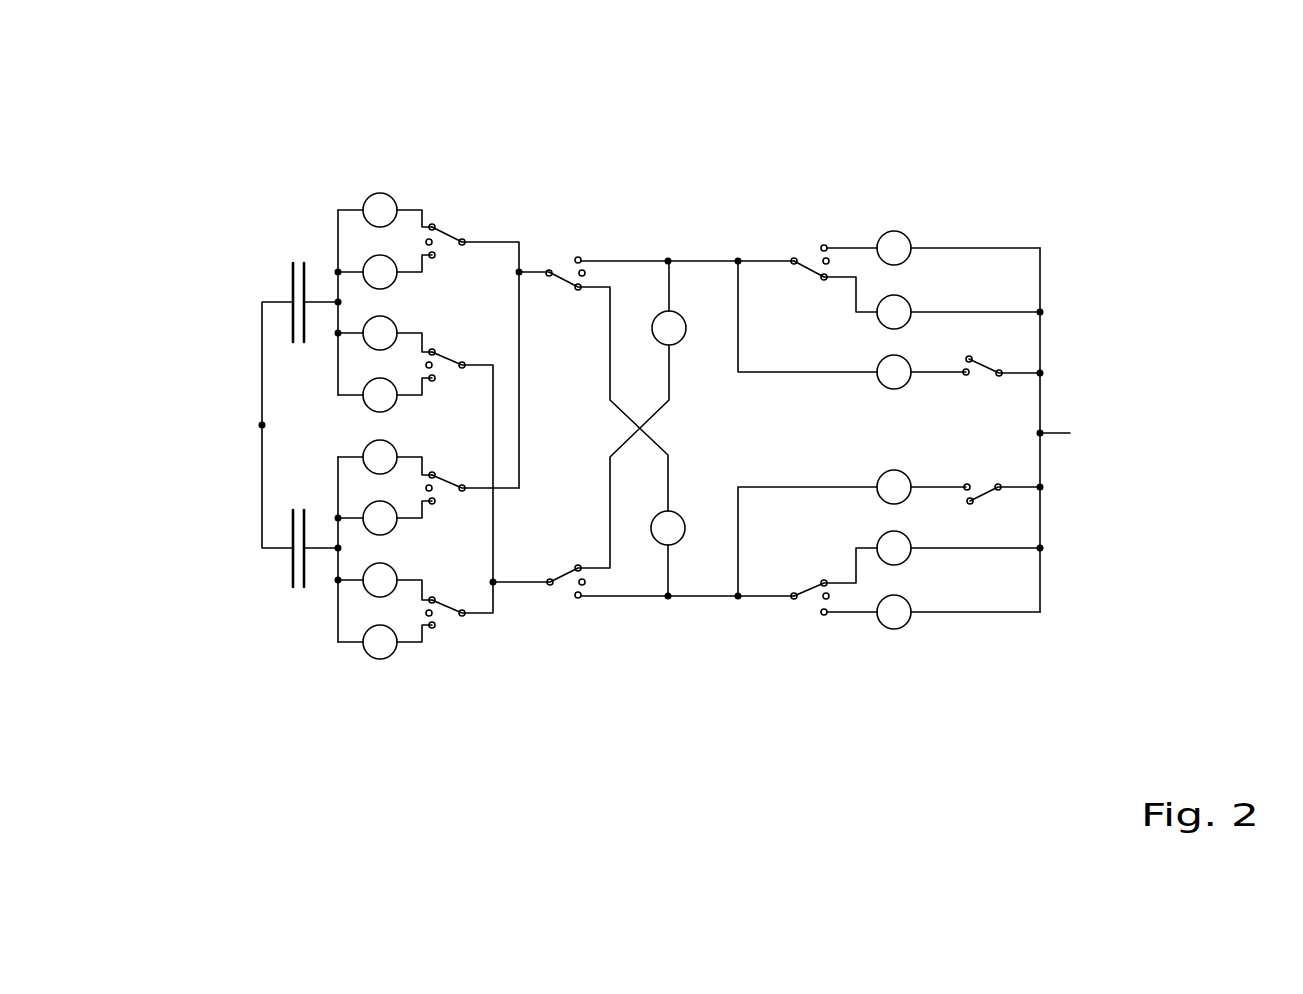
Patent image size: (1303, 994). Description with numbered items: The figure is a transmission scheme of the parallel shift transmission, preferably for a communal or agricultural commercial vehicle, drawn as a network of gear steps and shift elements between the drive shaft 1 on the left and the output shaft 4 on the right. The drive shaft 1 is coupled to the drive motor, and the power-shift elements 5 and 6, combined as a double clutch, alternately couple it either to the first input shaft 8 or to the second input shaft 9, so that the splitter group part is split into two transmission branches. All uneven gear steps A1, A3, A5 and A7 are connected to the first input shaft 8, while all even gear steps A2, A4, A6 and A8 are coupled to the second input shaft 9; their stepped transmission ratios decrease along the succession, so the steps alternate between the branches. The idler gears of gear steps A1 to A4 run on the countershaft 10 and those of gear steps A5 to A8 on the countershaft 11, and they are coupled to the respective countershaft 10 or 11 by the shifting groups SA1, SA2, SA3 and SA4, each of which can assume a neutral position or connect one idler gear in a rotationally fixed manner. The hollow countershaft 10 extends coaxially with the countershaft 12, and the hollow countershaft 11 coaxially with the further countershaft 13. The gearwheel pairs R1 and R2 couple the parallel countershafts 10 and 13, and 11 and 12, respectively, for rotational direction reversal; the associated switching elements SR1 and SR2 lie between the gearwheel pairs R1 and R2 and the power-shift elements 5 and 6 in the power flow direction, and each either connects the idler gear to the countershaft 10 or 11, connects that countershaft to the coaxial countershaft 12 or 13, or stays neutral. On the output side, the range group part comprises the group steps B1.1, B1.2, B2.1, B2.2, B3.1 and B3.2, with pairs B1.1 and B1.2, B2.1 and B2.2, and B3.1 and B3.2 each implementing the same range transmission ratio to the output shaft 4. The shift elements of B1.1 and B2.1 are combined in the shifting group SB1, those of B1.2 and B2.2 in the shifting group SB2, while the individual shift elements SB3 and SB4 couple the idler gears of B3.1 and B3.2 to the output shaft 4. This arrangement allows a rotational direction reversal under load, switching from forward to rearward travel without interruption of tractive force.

The drive shaft 1 is at (262, 425).
The output shaft 4 is at (1057, 430).
The power-shift element 5 is at (293, 263).
The power-shift element 6 is at (294, 588).
The first input shaft 8 is at (321, 297).
The second input shaft 9 is at (323, 553).
The countershaft 10 is at (448, 487).
The countershaft 11 is at (448, 353).
The countershaft 12 is at (762, 598).
The countershaft 13 is at (741, 261).
The gear step A1 is at (378, 398).
The gear step A2 is at (377, 650).
The gear step A3 is at (378, 338).
The gear step A4 is at (385, 582).
The gear step A5 is at (383, 270).
The gear step A6 is at (378, 512).
The gear step A7 is at (377, 205).
The gear step A8 is at (378, 448).
The shifting group SA1 is at (521, 270).
The shifting group SA2 is at (449, 613).
The shifting group SA3 is at (447, 236).
The shifting group SA4 is at (551, 585).
The switching element SR1 is at (580, 598).
The switching element SR2 is at (565, 280).
The gearwheel pair R1 is at (675, 320).
The gearwheel pair R2 is at (676, 545).
The shifting group SB1 is at (807, 593).
The shifting group SB2 is at (809, 265).
The shift element SB3 is at (985, 498).
The shift element SB4 is at (986, 366).
The group step B1.1 is at (903, 622).
The group step B1.2 is at (898, 243).
The group step B2.1 is at (903, 552).
The group step B2.2 is at (903, 310).
The group step B3.1 is at (905, 497).
The group step B3.2 is at (900, 367).